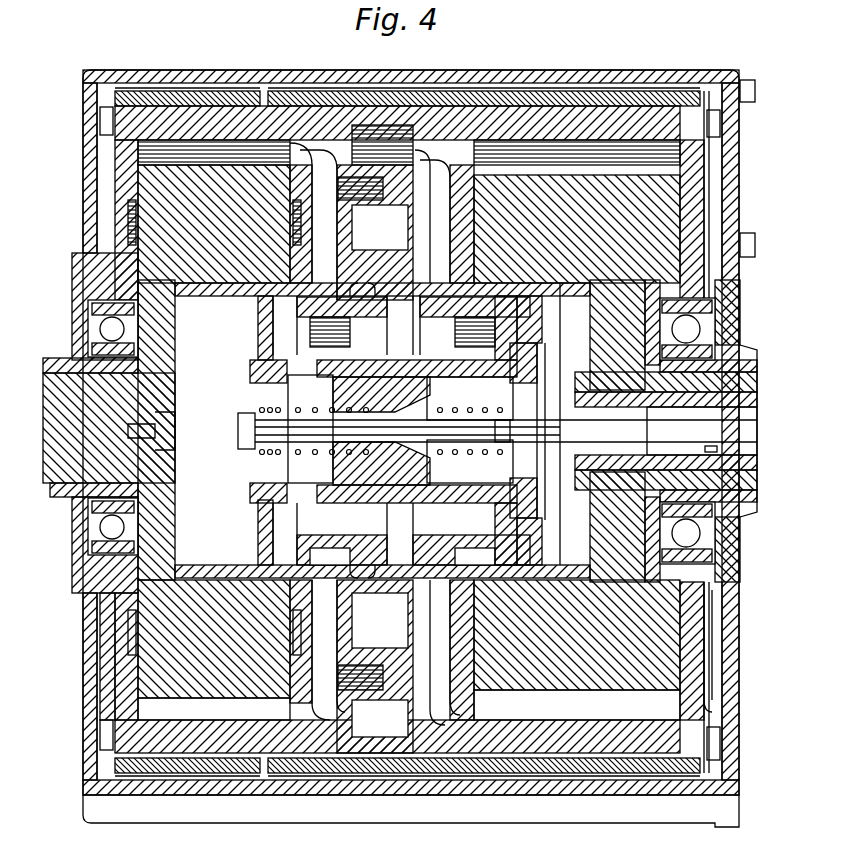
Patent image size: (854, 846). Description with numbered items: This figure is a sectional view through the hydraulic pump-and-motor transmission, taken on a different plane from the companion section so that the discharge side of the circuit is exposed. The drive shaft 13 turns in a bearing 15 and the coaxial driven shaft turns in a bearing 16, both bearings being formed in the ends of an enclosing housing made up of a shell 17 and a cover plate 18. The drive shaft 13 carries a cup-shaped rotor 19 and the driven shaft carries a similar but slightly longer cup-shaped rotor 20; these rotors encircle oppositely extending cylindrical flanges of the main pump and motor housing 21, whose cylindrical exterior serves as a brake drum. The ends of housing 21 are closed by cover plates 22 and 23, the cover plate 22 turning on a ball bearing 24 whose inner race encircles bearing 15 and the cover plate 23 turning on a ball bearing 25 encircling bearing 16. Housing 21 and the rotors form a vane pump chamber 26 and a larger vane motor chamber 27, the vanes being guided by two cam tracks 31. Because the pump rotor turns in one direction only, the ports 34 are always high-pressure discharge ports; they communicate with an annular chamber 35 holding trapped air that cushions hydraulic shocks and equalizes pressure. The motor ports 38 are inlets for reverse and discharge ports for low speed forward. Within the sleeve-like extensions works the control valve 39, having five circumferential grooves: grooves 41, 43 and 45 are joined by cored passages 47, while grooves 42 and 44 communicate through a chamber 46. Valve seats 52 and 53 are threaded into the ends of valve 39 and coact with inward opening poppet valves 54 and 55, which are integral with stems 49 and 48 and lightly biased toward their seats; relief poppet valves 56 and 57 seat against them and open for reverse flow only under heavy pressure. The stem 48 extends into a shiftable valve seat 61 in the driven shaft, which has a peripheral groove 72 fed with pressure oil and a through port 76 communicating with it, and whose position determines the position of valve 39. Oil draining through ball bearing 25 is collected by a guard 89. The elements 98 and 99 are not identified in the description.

The drive shaft 13 is at (50, 432).
The bearing 15 is at (53, 500).
The bearing 16 is at (748, 365).
The shell 17 is at (86, 80).
The cover plate 18 is at (740, 126).
The cup-shaped rotor 19 is at (210, 575).
The cup-shaped rotor 20 is at (720, 204).
The main pump and motor housing 21 is at (452, 125).
The cover plate 22 is at (120, 160).
The cover plate 23 is at (700, 158).
The ball bearing 24 is at (108, 325).
The ball bearing 25 is at (706, 327).
The vane pump chamber 26 is at (138, 712).
The vane motor chamber 27 is at (572, 152).
The cam track 31 is at (128, 222).
The discharge port 34 is at (318, 147).
The annular chamber 35 is at (375, 439).
The port 38 is at (411, 437).
The control valve 39 is at (258, 512).
The groove 41 is at (272, 334).
The groove 42 is at (326, 548).
The groove 43 is at (365, 325).
The groove 44 is at (434, 548).
The groove 45 is at (437, 325).
The chamber 46 is at (473, 414).
The passage 47 is at (432, 363).
The stem 48 is at (598, 438).
The stem 49 is at (245, 427).
The valve seat 52 is at (253, 378).
The valve seat 53 is at (535, 375).
The poppet valve 54 is at (288, 398).
The poppet valve 55 is at (498, 498).
The relief poppet valve 56 is at (270, 450).
The relief poppet valve 57 is at (540, 470).
The shiftable valve seat 61 is at (752, 434).
The groove 72 is at (735, 403).
The through port 76 is at (712, 447).
The guard 89 is at (712, 618).
The shield plate 98 is at (178, 92).
The shield plate 99 is at (655, 95).